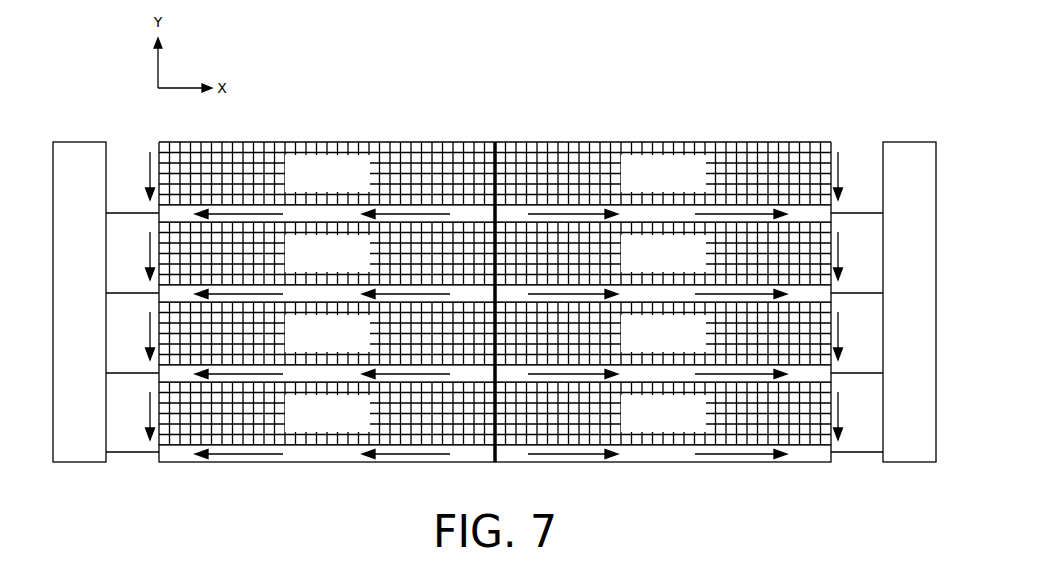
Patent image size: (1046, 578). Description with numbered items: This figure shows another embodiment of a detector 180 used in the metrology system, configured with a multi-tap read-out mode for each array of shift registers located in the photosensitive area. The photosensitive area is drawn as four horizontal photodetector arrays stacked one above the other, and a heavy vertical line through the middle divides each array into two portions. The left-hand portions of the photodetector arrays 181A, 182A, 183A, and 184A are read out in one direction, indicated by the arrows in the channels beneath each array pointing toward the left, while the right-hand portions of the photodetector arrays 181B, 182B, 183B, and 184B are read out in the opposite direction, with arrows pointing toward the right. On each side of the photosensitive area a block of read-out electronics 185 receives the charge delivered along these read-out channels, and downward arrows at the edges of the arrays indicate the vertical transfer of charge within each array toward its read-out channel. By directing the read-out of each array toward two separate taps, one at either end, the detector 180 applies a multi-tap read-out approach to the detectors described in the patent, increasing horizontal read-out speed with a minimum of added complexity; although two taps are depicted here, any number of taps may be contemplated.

The detector 180 is at (881, 100).
The portion of photodetector array 181A is at (327, 173).
The portion of photodetector array 181B is at (663, 173).
The portion of photodetector array 182A is at (327, 253).
The portion of photodetector array 182B is at (663, 253).
The portion of photodetector array 183A is at (327, 333).
The portion of photodetector array 183B is at (663, 333).
The portion of photodetector array 184A is at (327, 413).
The portion of photodetector array 184B is at (663, 413).
The read-out electronics 185 is at (65, 310).